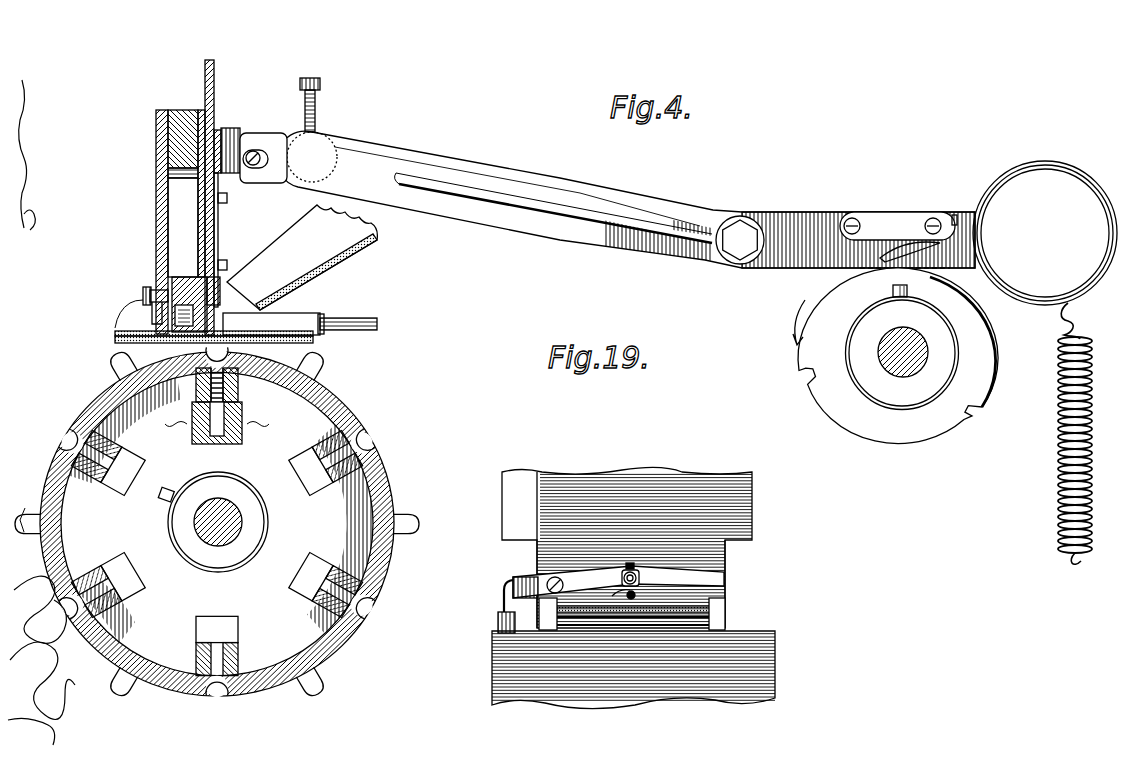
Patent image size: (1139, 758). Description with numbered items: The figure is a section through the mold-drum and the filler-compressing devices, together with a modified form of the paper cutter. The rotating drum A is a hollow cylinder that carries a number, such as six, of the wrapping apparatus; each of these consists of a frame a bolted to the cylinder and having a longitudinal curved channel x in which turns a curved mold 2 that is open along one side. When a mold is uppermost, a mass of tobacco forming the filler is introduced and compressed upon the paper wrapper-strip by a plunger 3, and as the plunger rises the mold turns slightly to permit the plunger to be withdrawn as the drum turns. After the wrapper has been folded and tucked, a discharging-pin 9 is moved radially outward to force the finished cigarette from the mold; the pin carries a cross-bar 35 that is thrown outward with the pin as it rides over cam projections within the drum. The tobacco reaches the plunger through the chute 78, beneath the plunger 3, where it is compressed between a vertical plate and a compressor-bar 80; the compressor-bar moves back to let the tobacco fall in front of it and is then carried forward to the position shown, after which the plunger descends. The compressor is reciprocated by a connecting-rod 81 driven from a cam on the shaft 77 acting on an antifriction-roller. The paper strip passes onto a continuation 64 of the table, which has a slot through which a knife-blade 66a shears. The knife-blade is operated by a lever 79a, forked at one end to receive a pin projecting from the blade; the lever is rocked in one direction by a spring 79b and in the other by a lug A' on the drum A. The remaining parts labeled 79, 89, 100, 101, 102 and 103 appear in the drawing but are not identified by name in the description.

In FIG. 4, the curved mold 2 is at (243, 376).
In FIG. 4, the plunger 3 is at (216, 292).
In FIG. 4, the discharging-pin 9 is at (190, 382).
In FIG. 4, the cross-bar 35 is at (246, 438).
In FIG. 4, the continuation of the table 64 is at (120, 346).
In FIG. 19, the continuation of the table 64 is at (618, 622).
In FIG. 4, the knife-blade 66a is at (212, 331).
In FIG. 19, the knife-blade 66a is at (726, 614).
In FIG. 4, the shaft 77 is at (882, 352).
In FIG. 4, the chute 78 is at (378, 243).
In FIG. 4, the tool post column 79 is at (158, 200).
In FIG. 19, the tool post column 79 is at (627, 547).
In FIG. 4, the lever 79a is at (158, 290).
In FIG. 19, the lever 79a is at (530, 578).
In FIG. 19, the spring 79b is at (700, 576).
In FIG. 4, the compressor-bar 80 is at (316, 272).
In FIG. 4, the connecting-rod 81 is at (372, 329).
In FIG. 4, the cam disk 89 is at (890, 440).
In FIG. 4, the operating lever 100 is at (582, 228).
In FIG. 4, the cam notch 101 is at (804, 374).
In FIG. 4, the pawl plate 102 is at (918, 244).
In FIG. 4, the tension spring 103 is at (1060, 488).
In FIG. 4, the frame a is at (380, 460).
In FIG. 4, the curved channel x is at (363, 433).
In FIG. 4, the rotating drum A is at (217, 524).
In FIG. 19, the rotating drum A is at (649, 670).
In FIG. 4, the lug A' is at (246, 463).
In FIG. 19, the lug A' is at (470, 625).